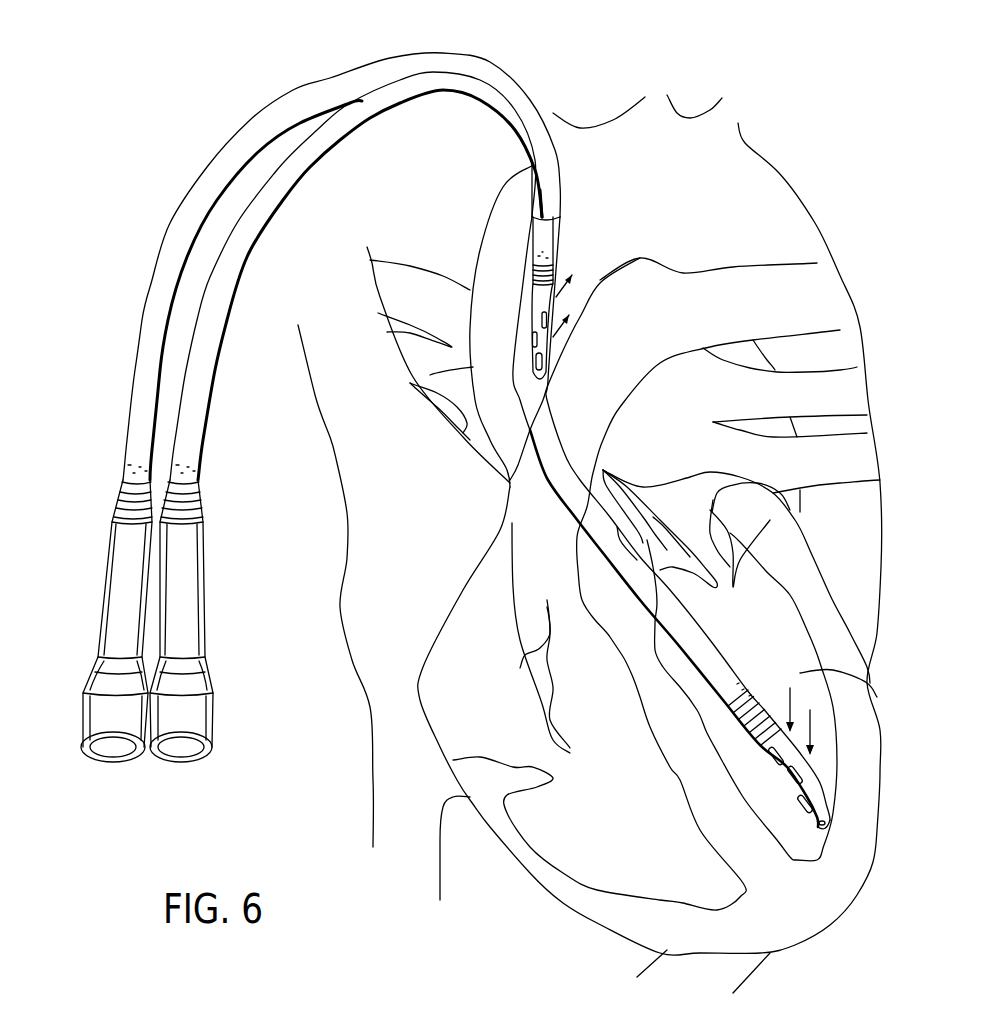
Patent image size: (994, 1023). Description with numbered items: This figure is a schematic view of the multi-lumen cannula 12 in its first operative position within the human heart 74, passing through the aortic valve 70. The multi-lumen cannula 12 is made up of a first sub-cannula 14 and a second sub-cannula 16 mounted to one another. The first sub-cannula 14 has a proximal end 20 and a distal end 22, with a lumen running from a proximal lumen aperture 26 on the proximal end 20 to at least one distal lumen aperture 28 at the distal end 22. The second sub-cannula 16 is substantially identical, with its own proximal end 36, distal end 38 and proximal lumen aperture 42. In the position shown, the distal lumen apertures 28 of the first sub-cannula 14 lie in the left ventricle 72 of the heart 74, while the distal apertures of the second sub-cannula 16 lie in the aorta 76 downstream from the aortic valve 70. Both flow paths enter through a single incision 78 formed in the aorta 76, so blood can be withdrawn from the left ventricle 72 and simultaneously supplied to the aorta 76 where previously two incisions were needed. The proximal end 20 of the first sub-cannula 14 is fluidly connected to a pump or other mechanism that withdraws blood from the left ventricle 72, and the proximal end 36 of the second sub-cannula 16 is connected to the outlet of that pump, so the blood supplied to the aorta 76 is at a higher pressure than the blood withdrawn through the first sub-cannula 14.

The multi-lumen cannula 12 is at (414, 50).
The first sub-cannula 14 is at (290, 200).
The second sub-cannula 16 is at (267, 102).
The proximal end 20 is at (205, 624).
The distal end 22 is at (671, 523).
The proximal lumen aperture 26 is at (178, 752).
The distal lumen aperture 28 is at (797, 808).
The proximal end 36 is at (105, 647).
The distal end 38 is at (564, 198).
The proximal lumen aperture 42 is at (117, 750).
The aortic valve 70 is at (640, 543).
The left ventricle 72 is at (860, 680).
The heart 74 is at (553, 890).
The aorta 76 is at (430, 375).
The single incision 78 is at (534, 215).